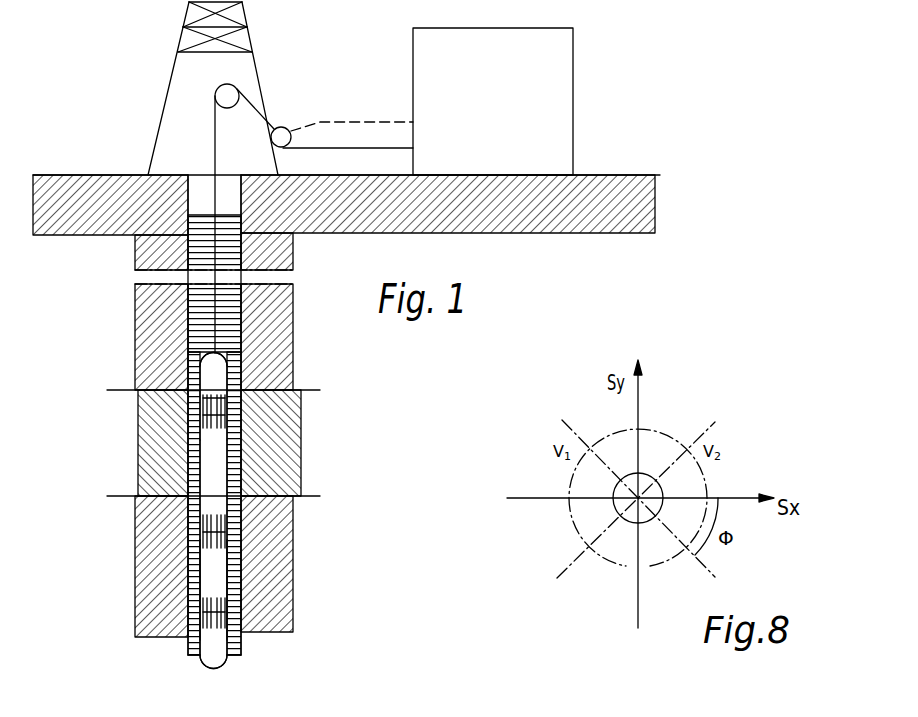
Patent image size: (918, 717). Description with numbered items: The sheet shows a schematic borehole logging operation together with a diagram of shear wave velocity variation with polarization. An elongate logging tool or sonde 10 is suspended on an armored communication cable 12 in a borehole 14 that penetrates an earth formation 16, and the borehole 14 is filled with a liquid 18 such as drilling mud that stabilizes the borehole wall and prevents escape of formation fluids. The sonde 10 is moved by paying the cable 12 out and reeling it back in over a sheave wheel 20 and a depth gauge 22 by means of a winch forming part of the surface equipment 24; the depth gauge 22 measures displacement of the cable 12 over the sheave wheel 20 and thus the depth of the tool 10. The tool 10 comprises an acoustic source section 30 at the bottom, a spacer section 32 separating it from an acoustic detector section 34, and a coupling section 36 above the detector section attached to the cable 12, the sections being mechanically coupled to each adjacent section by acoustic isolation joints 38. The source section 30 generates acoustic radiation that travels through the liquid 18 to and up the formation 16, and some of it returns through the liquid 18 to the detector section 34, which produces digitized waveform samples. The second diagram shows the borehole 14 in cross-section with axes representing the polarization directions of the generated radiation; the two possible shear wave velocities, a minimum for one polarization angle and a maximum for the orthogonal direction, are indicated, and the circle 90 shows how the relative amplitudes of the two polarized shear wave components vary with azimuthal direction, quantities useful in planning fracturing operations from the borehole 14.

In FIG. 1, the logging tool or sonde 10 is at (196, 666).
In FIG. 1, the armored communication cable 12 is at (215, 152).
In FIG. 1, the borehole 14 is at (213, 415).
In FIG. 8, the borehole 14 is at (650, 520).
In FIG. 1, the earth formation 16 is at (152, 612).
In FIG. 1, the liquid 18 is at (200, 337).
In FIG. 1, the sheave wheel 20 is at (215, 95).
In FIG. 1, the depth gauge 22 is at (278, 133).
In FIG. 1, the surface equipment 24 is at (573, 110).
In FIG. 1, the acoustic source section 30 is at (215, 648).
In FIG. 1, the spacer section 32 is at (215, 572).
In FIG. 1, the acoustic detector section 34 is at (218, 465).
In FIG. 1, the coupling section 36 is at (215, 378).
In FIG. 1, the acoustic isolation joints 38 is at (206, 427).
In FIG. 8, the circle 90 is at (705, 488).